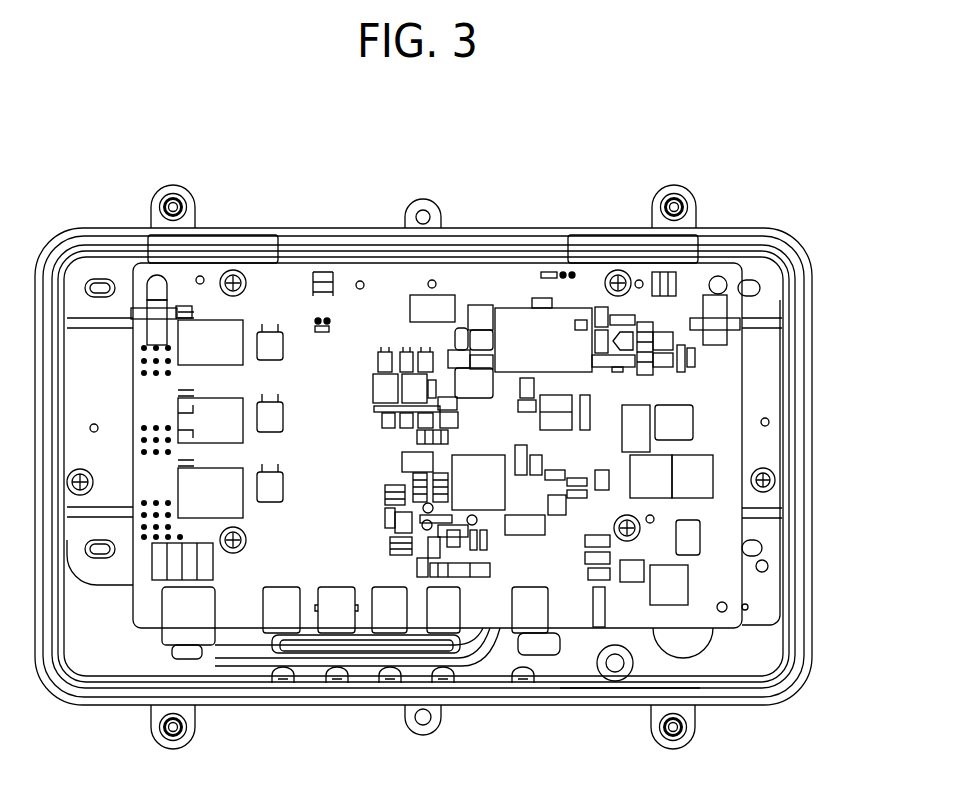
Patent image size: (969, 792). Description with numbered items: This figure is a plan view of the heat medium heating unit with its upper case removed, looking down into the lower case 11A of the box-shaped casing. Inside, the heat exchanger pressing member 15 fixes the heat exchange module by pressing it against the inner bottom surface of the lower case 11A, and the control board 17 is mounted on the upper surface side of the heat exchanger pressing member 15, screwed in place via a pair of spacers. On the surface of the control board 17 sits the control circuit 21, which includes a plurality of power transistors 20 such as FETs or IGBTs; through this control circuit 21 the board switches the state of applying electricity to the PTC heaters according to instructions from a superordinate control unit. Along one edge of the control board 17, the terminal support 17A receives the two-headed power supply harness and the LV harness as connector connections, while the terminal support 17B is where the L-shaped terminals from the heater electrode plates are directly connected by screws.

The lower case 11A is at (597, 688).
The heat exchanger pressing member 15 is at (760, 358).
The control board 17 is at (505, 277).
The terminal support 17A is at (170, 637).
The terminal support 17B is at (335, 585).
The power transistor 20 is at (205, 422).
The control circuit 21 is at (380, 284).